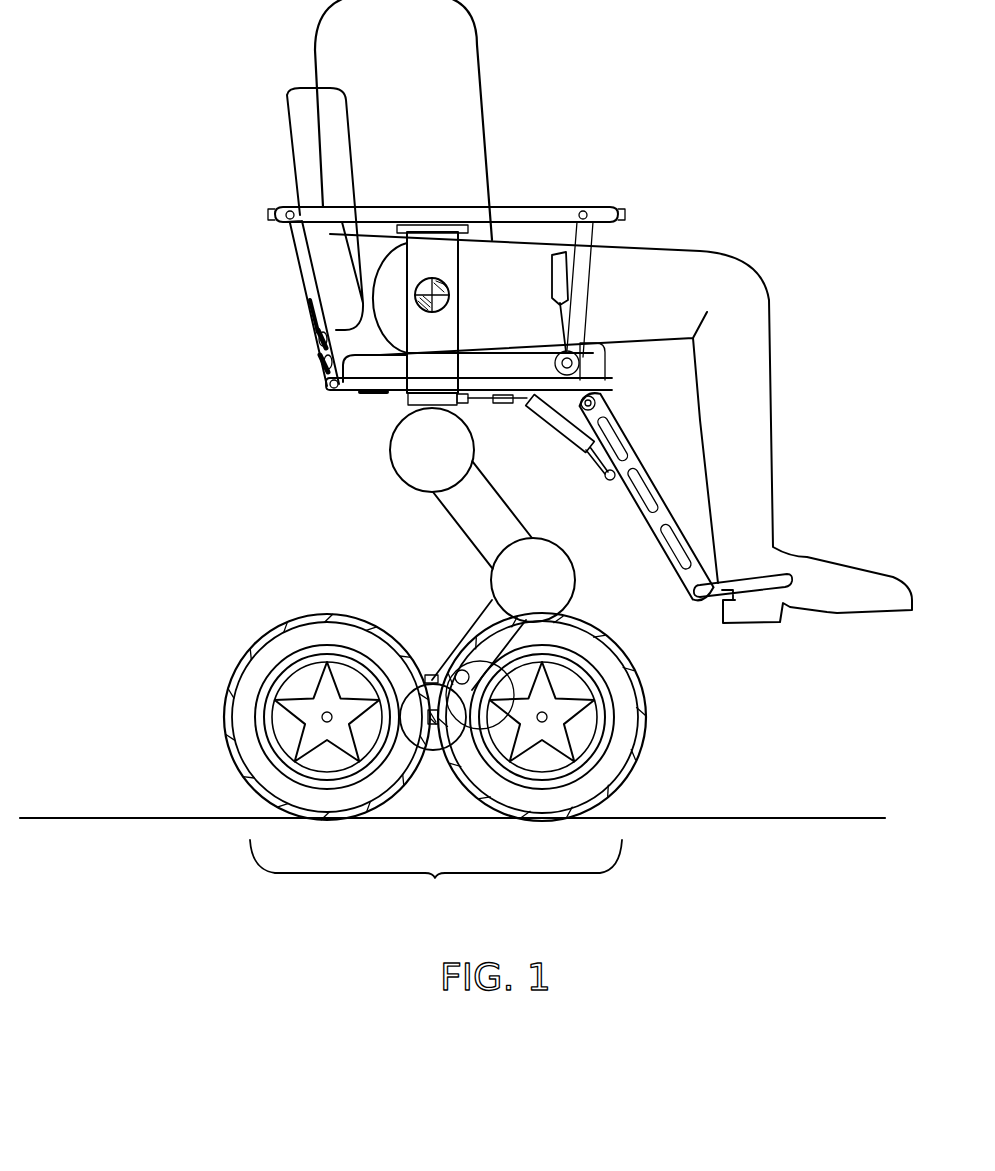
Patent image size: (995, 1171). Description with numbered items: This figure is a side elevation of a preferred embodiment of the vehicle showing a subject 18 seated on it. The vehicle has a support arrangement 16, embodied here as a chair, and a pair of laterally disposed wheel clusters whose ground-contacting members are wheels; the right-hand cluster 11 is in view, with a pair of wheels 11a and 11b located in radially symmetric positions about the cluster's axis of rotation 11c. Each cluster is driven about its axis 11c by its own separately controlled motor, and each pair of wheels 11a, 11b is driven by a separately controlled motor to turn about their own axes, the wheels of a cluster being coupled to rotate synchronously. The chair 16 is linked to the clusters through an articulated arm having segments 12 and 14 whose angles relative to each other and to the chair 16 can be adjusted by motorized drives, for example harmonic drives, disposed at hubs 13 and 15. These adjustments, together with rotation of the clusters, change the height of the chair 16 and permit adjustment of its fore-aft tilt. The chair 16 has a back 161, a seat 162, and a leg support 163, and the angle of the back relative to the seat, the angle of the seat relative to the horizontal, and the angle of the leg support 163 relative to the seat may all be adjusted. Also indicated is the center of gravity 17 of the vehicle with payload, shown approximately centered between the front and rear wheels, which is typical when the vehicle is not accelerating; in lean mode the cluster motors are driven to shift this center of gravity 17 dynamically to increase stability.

The wheel cluster 11 is at (436, 875).
The wheel 11a is at (628, 709).
The wheel 11b is at (240, 709).
The axis of rotation 11c is at (433, 727).
The arm segment 12 is at (483, 618).
The hub 13 is at (547, 592).
The arm segment 14 is at (494, 526).
The hub 15 is at (445, 460).
The support arrangement 16 is at (198, 331).
The back 161 is at (313, 262).
The seat 162 is at (378, 393).
The leg support 163 is at (625, 427).
The center of gravity 17 is at (440, 279).
The subject 18 is at (421, 110).